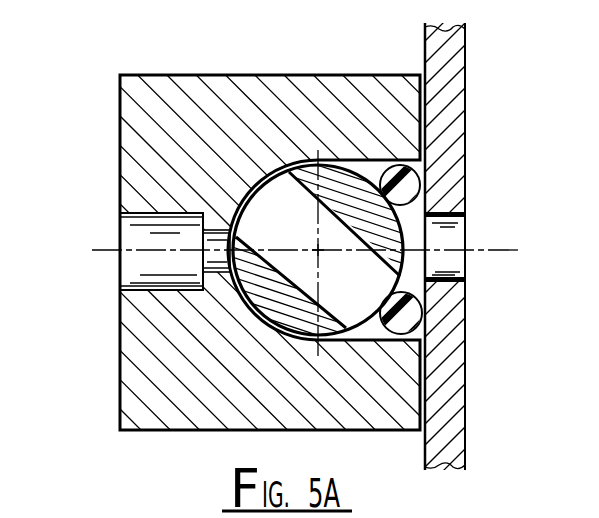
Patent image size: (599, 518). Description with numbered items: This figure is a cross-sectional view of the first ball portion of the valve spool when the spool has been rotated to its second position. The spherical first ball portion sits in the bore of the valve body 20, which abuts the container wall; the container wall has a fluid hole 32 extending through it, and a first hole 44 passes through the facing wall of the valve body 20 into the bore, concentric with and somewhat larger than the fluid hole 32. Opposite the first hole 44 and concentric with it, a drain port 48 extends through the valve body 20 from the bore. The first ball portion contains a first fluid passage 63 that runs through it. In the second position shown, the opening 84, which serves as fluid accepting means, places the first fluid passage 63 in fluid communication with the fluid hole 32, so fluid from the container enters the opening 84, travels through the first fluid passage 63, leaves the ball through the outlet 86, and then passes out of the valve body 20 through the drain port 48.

The valve body 20 is at (169, 154).
The fluid hole 32 is at (447, 221).
The first hole 44 is at (374, 341).
The drain port 48 is at (147, 264).
The first fluid passage 63 is at (294, 258).
The opening 84 is at (385, 278).
The outlet 86 is at (308, 243).